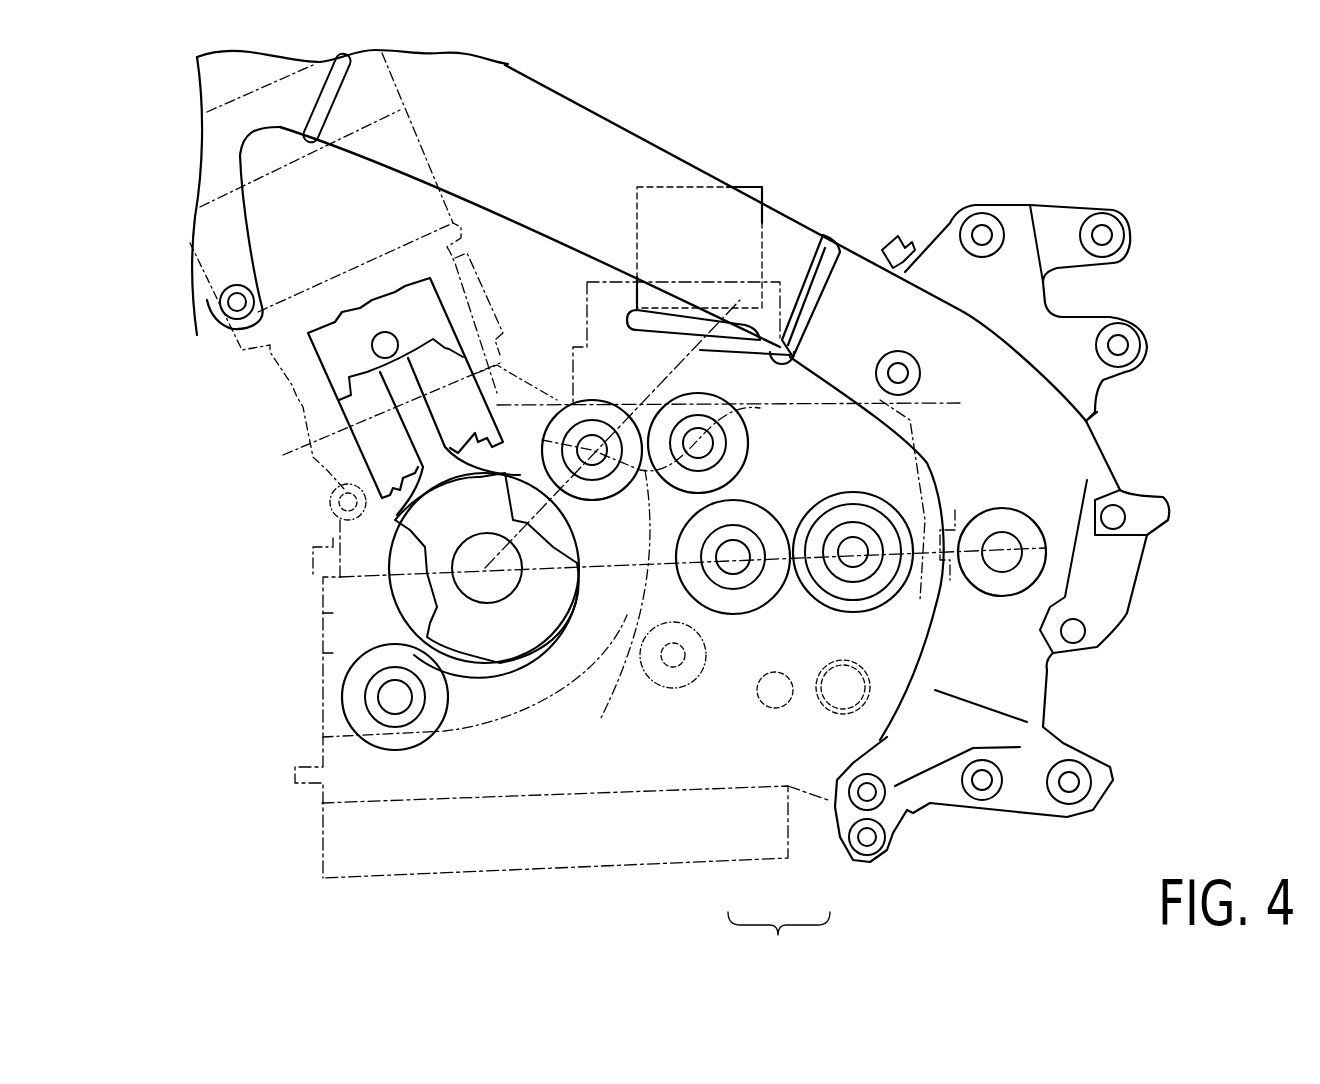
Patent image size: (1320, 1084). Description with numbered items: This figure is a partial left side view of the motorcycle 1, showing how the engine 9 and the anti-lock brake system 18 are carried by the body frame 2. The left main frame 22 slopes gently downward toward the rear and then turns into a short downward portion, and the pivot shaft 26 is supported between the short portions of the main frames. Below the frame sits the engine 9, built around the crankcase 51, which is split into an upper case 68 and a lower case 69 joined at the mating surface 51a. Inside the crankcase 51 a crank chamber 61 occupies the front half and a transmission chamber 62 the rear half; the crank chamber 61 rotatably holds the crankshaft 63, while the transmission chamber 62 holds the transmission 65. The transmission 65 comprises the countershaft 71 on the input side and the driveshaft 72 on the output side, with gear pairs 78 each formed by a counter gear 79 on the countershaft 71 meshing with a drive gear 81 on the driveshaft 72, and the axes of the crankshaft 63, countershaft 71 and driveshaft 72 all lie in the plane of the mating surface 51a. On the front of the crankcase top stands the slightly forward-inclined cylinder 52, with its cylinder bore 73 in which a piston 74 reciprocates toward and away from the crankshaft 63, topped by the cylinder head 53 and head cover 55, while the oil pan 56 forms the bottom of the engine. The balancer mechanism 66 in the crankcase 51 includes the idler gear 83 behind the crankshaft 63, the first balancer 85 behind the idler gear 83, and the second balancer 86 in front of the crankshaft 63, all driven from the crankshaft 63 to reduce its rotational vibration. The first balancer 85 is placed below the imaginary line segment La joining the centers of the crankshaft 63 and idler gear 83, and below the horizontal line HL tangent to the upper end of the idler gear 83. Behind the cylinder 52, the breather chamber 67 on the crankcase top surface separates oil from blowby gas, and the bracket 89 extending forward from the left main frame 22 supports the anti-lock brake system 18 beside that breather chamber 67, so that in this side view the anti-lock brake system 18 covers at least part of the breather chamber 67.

The motorcycle 1 is at (165, 378).
The body frame 2 is at (633, 110).
The engine 9 is at (509, 240).
The anti-lock brake system 18 is at (742, 187).
The main frame 22 is at (660, 148).
The pivot shaft 26 is at (1043, 552).
The crankcase 51 is at (213, 525).
The mating surface 51a is at (945, 520).
The cylinder 52 is at (272, 372).
The cylinder head 53 is at (440, 150).
The head cover 55 is at (413, 100).
The oil pan 56 is at (433, 880).
The crank chamber 61 is at (323, 653).
The transmission chamber 62 is at (945, 445).
The crankshaft 63 is at (517, 640).
The transmission 65 is at (779, 940).
The balancer mechanism 66 is at (636, 505).
The breather chamber 67 is at (680, 282).
The upper case 68 is at (333, 538).
The lower case 69 is at (330, 612).
The countershaft 71 is at (733, 570).
The driveshaft 72 is at (853, 570).
The cylinder bore 73 is at (460, 353).
The piston 74 is at (368, 300).
The gear pair 78 is at (900, 188).
The counter gear 79 is at (755, 500).
The drive gear 81 is at (863, 490).
The idler gear 83 is at (600, 505).
The first balancer 85 is at (674, 620).
The second balancer 86 is at (445, 738).
The bracket 89 is at (657, 330).
The horizontal line HL is at (518, 400).
The imaginary line segment La is at (676, 317).